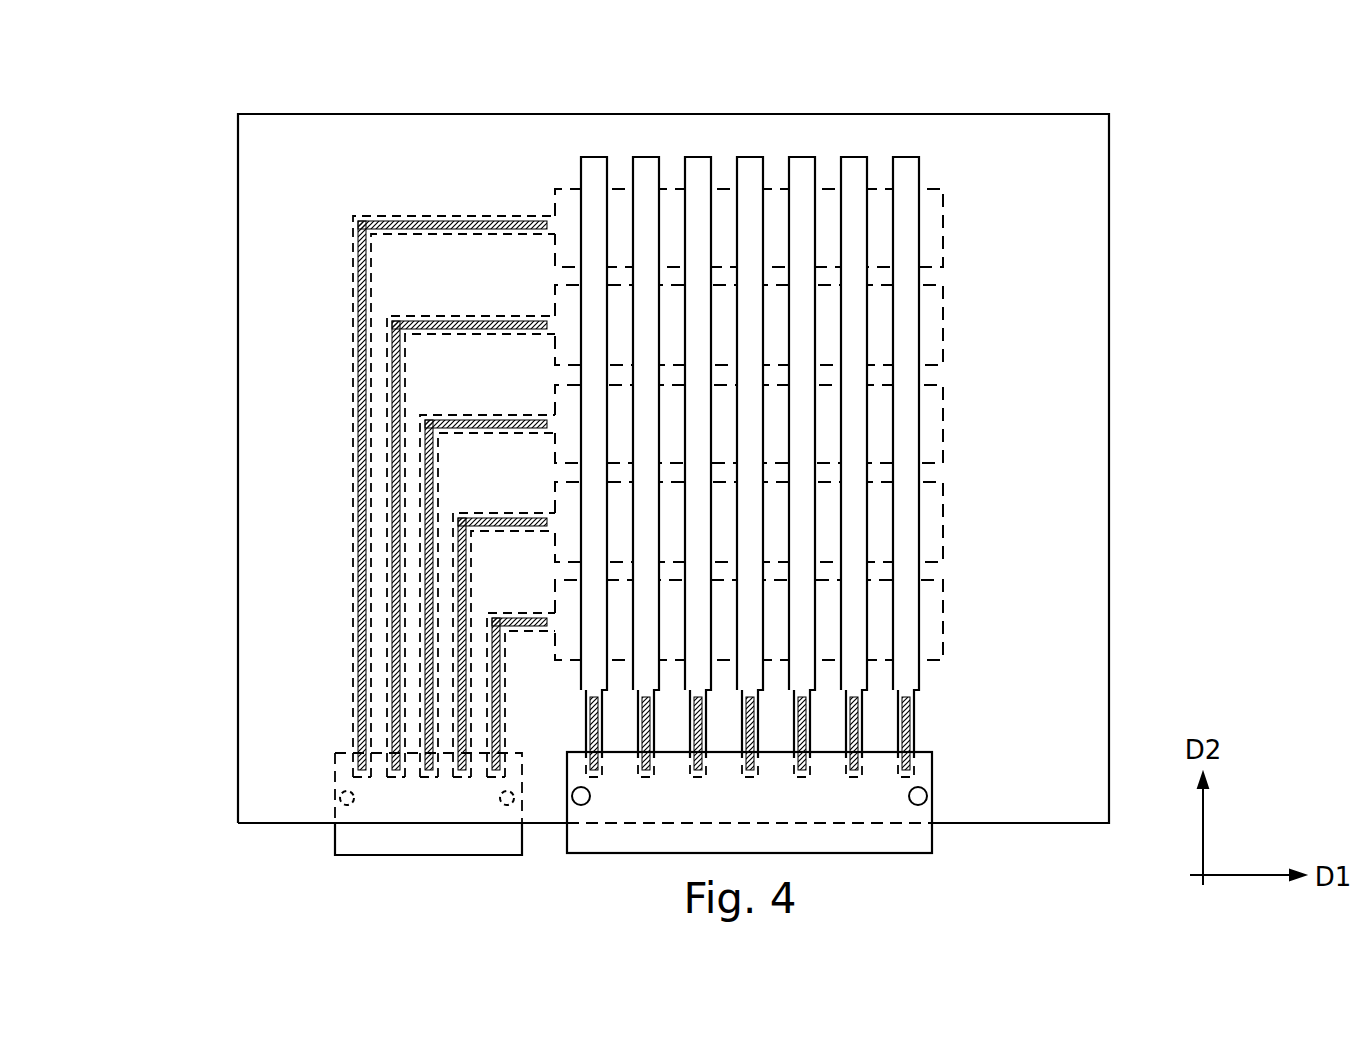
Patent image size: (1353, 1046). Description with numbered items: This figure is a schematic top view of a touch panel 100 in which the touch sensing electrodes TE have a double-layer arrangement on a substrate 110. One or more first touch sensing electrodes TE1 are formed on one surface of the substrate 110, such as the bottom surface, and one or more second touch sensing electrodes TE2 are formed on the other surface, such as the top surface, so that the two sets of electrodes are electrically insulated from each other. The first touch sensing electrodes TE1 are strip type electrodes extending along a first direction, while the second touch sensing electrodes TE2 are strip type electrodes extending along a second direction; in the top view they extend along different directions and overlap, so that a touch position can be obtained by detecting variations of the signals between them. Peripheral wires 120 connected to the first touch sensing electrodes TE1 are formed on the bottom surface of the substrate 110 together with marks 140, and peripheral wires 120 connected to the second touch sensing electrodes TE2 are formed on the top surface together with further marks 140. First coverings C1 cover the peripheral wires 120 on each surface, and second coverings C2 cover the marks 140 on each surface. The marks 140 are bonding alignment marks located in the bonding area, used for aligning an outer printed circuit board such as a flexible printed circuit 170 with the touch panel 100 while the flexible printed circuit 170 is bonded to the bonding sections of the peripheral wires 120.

The touch panel 100 is at (101, 98).
The substrate 110 is at (262, 160).
The peripheral wire 120 is at (355, 265).
The first covering C1 is at (355, 325).
The mark 140 is at (341, 792).
The second covering C2 is at (633, 796).
The flexible printed circuit 170 is at (335, 843).
The touch sensing electrode TE is at (802, 66).
The first touch sensing electrode TE1 is at (931, 229).
The second touch sensing electrode TE2 is at (903, 168).